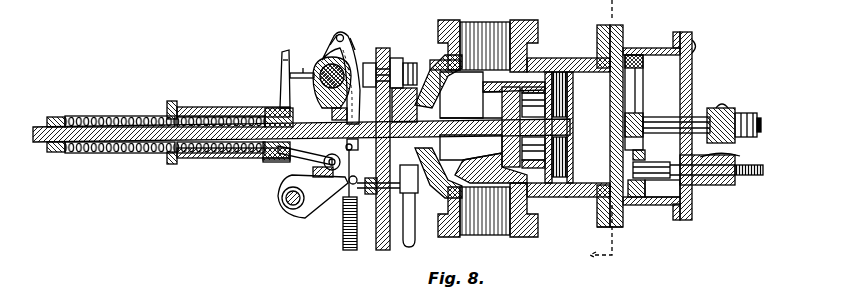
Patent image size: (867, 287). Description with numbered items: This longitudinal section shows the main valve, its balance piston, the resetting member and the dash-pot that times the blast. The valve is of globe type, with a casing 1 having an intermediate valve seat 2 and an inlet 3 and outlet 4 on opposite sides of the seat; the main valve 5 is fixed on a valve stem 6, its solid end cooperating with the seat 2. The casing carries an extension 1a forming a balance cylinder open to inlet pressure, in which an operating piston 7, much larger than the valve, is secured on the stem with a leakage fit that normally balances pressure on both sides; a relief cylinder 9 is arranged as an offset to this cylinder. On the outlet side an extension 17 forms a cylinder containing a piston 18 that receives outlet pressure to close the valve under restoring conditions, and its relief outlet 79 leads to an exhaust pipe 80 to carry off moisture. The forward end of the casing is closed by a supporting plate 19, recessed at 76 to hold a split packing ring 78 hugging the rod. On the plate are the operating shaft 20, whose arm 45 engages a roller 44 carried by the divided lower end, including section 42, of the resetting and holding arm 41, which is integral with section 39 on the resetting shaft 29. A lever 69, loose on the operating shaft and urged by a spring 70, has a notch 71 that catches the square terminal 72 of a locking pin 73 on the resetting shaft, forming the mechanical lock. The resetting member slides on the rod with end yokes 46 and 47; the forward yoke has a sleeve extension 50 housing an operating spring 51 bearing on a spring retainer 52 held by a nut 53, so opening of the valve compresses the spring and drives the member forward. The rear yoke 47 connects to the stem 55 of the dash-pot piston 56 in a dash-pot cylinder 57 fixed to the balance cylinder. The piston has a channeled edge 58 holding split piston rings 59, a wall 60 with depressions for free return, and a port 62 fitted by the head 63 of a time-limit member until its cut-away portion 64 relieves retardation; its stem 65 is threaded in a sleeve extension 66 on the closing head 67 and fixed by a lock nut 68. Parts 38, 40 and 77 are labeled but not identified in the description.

The casing 1 is at (577, 197).
The extension forming a cylinder 1a is at (566, 198).
The valve seat 2 is at (500, 96).
The inlet 3 is at (497, 232).
The outlet 4 is at (502, 32).
The main valve 5 is at (522, 88).
The valve stem 6 is at (472, 140).
The operating piston 7 is at (574, 148).
The relief cylinder 9 is at (599, 133).
The extension forming a cylinder 17 is at (414, 62).
The piston 18 is at (452, 100).
The supporting plate 19 is at (383, 250).
The operating shaft 20 is at (278, 197).
The resetting shaft 29 is at (318, 62).
The spring 38 is at (346, 250).
The section 39 is at (333, 40).
The arm 40 is at (352, 42).
The resetting and holding arm 41 is at (314, 86).
The section 42 is at (332, 114).
The roller 44 is at (282, 163).
The arm 45 is at (325, 195).
The forward yoke 46 is at (170, 101).
The rear yoke 47 is at (732, 108).
The sleeve extension 50 is at (232, 107).
The operating spring 51 is at (118, 126).
The spring retainer 52 is at (80, 117).
The nut 53 is at (52, 117).
The stem 55 is at (664, 118).
The dash-pot piston 56 is at (636, 102).
The dash-pot cylinder 57 is at (648, 47).
The channeled edge 58 is at (603, 228).
The split piston rings 59 is at (633, 200).
The piston wall 60 is at (647, 205).
The opening 62 is at (612, 168).
The head 63 is at (668, 205).
The cut-away portion 64 is at (658, 162).
The stem 65 is at (715, 186).
The sleeve extension 66 is at (712, 158).
The head 67 is at (693, 80).
The lock nut 68 is at (748, 176).
The lever 69 is at (278, 158).
The spring 70 is at (356, 178).
The notch 71 is at (282, 68).
The square terminal 72 is at (281, 90).
The locking pin 73 is at (310, 72).
The recess 76 is at (358, 146).
The flange 77 is at (428, 92).
The split packing ring 78 is at (390, 60).
The relief outlet 79 is at (471, 116).
The exhaust pipe 80 is at (409, 247).